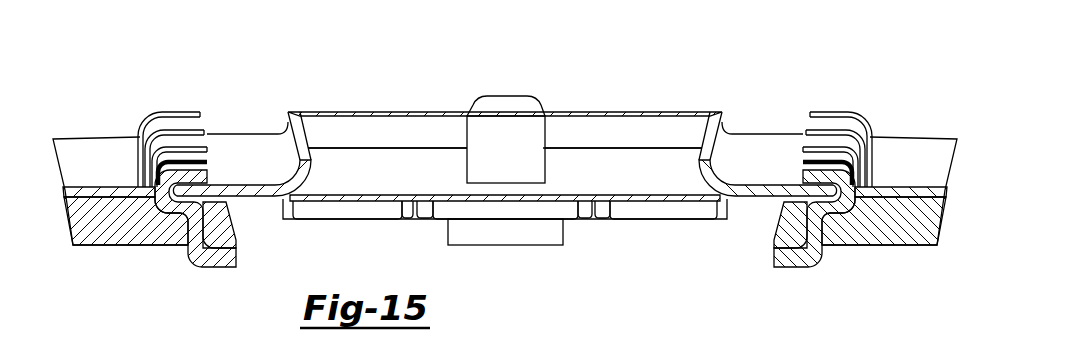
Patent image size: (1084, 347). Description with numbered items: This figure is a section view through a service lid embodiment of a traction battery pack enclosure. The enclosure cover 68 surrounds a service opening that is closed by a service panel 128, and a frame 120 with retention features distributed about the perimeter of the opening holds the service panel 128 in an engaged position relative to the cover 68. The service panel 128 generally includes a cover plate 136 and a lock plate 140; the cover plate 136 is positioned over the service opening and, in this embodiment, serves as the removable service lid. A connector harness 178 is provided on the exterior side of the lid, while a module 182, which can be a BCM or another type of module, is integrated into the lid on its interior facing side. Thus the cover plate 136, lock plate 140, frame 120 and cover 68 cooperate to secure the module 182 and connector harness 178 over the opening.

The cover 68 is at (887, 235).
The frame 120 is at (838, 117).
The service panel 128 is at (707, 78).
The cover plate 136 is at (348, 178).
The lock plate 140 is at (655, 112).
The connector harness 178 is at (512, 98).
The module 182 is at (505, 245).